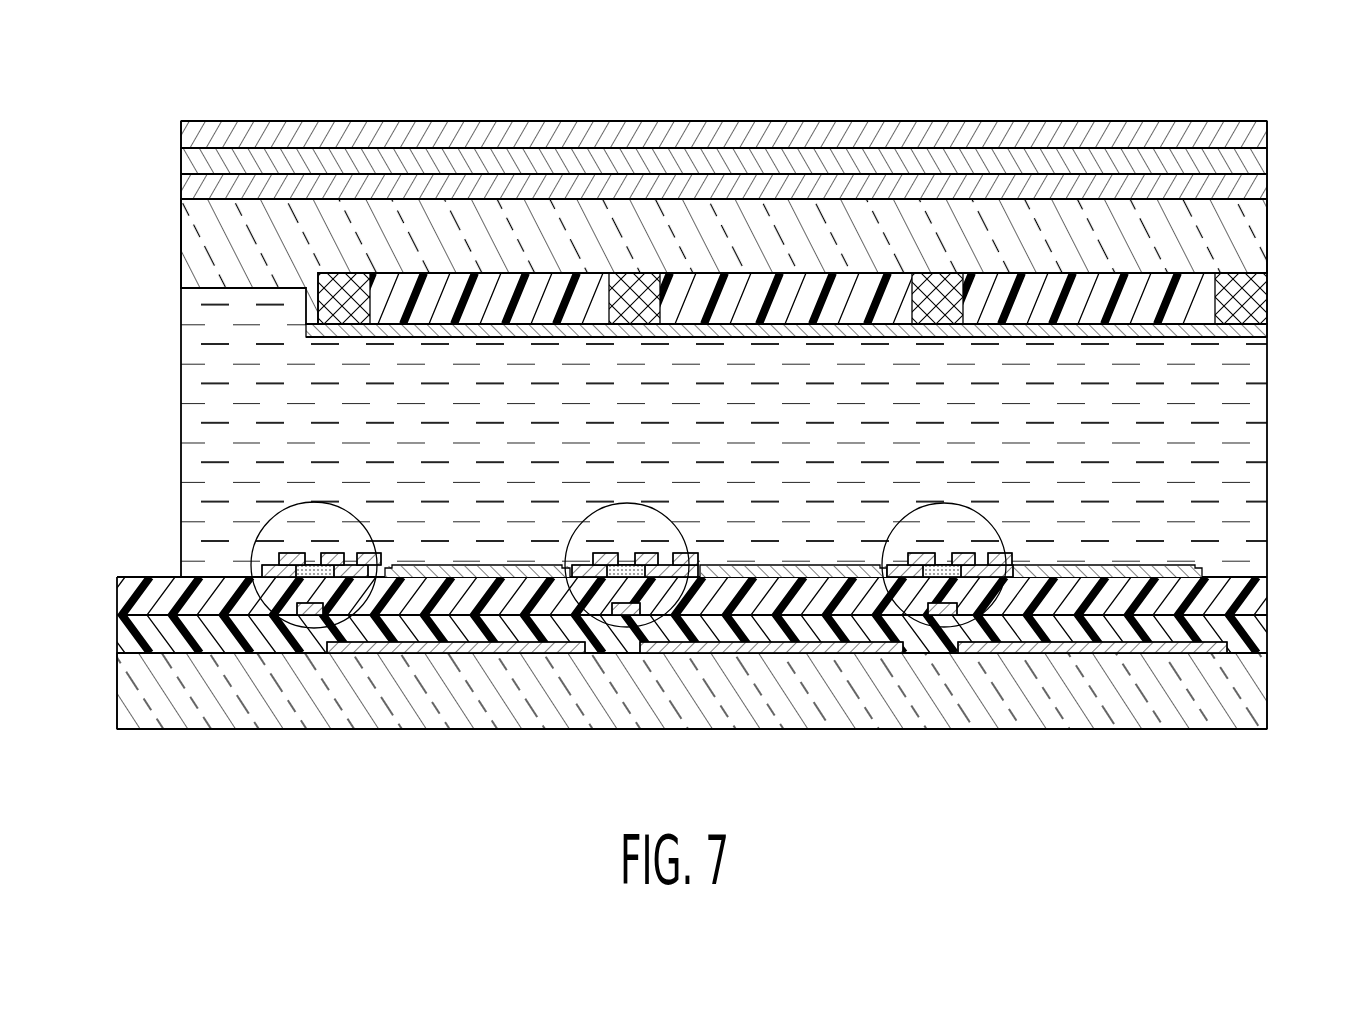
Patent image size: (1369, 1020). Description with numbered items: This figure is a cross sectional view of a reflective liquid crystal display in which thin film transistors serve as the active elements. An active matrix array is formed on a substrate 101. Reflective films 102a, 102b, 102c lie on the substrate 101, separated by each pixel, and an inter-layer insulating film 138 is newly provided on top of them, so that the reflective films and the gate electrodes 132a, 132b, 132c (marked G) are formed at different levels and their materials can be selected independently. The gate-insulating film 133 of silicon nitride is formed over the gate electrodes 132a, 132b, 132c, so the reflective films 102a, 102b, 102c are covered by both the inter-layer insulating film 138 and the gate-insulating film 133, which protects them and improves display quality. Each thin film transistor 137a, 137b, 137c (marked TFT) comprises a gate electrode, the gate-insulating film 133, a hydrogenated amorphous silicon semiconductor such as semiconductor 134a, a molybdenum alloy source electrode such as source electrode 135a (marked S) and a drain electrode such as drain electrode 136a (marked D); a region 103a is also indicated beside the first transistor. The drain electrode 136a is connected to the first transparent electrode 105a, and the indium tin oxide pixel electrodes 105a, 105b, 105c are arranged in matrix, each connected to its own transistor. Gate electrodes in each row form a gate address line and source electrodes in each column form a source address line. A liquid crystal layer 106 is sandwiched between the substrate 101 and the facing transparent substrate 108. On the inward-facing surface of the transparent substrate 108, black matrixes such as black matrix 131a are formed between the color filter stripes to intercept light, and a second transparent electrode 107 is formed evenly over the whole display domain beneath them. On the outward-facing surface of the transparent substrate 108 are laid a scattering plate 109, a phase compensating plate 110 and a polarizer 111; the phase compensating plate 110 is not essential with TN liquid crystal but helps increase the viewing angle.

The substrate 101 is at (1318, 713).
The reflective film 102a is at (480, 653).
The reflective film 102b is at (795, 653).
The reflective film 102c is at (1095, 653).
The gate insulating layer 103a is at (430, 583).
The first transparent electrode 105a is at (492, 565).
The first transparent electrode 105b is at (842, 565).
The first transparent electrode 105c is at (1170, 565).
The liquid crystal layer 106 is at (1318, 432).
The second transparent electrode 107 is at (1318, 345).
The transparent substrate 108 is at (1318, 230).
The scattering plate 109 is at (1318, 190).
The phase compensating plate 110 is at (1318, 141).
The polarizer 111 is at (1318, 102).
The black matrix 131a is at (344, 273).
The gate electrode 132a is at (283, 778).
The gate electrode 132b is at (648, 778).
The gate electrode 132c is at (978, 778).
The gate-insulating film 133 is at (1318, 579).
The semiconductor 134a is at (286, 553).
The source electrode 135a is at (268, 563).
The drain electrode 136a is at (358, 553).
The thin film transistor 137a is at (266, 601).
The thin film transistor 137b is at (674, 622).
The thin film transistor 137c is at (996, 626).
The inter-layer insulating film 138 is at (1318, 627).